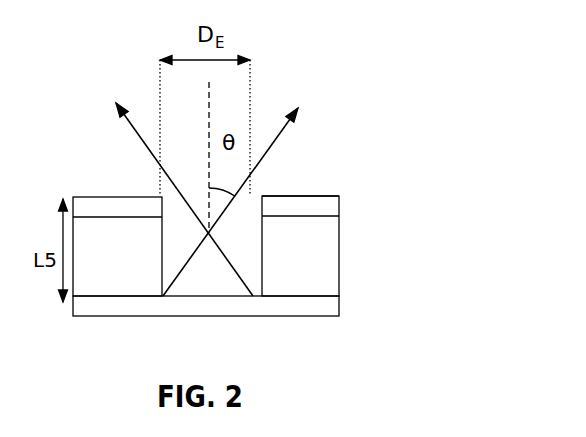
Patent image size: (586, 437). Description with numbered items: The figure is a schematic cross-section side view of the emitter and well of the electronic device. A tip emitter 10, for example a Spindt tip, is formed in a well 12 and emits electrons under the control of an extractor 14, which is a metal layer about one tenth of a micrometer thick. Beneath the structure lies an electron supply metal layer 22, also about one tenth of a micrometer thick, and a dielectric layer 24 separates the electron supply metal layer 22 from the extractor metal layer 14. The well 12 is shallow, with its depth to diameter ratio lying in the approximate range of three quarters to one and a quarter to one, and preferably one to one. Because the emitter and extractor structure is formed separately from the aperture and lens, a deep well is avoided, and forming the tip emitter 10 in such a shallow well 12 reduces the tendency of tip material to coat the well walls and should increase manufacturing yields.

The tip emitter 10 is at (207, 249).
The well 12 is at (252, 187).
The extractor 14 is at (339, 206).
The electron supply metal layer 22 is at (339, 307).
The dielectric layer 24 is at (327, 272).